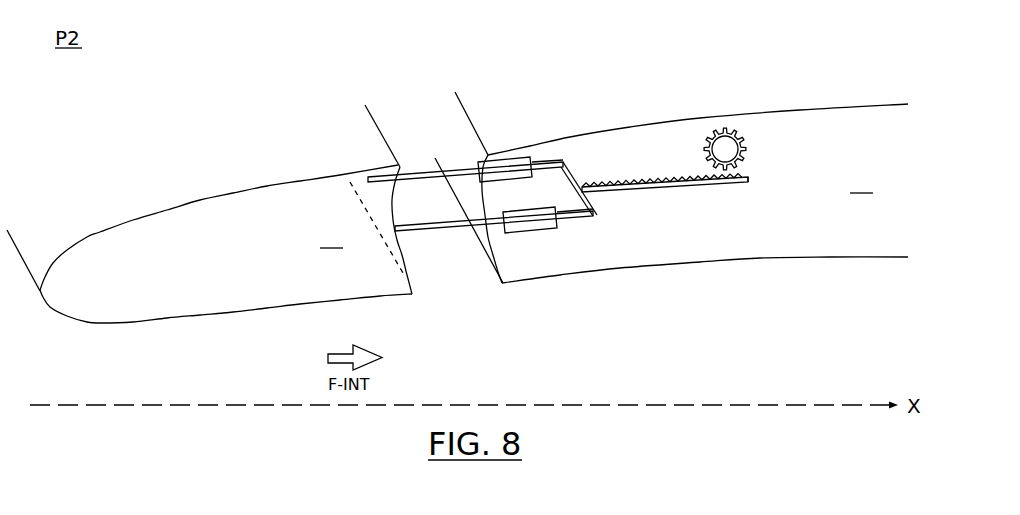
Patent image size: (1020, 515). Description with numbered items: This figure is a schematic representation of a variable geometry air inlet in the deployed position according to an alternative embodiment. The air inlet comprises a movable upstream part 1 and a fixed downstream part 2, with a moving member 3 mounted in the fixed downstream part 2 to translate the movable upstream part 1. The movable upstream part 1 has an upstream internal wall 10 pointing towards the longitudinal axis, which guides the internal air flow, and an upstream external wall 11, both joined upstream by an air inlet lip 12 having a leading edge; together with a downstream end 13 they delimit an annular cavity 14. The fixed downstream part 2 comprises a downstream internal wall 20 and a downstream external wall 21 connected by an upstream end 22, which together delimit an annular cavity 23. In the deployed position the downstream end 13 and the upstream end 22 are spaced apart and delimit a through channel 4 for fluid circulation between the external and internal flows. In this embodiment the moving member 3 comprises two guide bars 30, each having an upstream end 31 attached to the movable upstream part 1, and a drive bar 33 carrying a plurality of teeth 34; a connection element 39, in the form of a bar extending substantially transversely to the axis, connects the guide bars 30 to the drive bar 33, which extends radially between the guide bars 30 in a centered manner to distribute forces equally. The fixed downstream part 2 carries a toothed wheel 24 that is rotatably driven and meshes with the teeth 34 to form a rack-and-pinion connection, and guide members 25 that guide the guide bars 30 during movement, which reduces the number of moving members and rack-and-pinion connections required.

The movable upstream part 1 is at (150, 170).
The fixed downstream part 2 is at (730, 58).
The moving member 3 is at (626, 209).
The through channel 4 is at (474, 276).
The upstream internal wall 10 is at (218, 317).
The upstream external wall 11 is at (205, 148).
The air inlet lip 12 is at (40, 293).
The downstream end 13 is at (381, 125).
The annular cavity 14 is at (332, 238).
The downstream internal wall 20 is at (793, 258).
The downstream external wall 21 is at (690, 70).
The upstream end 22 is at (456, 108).
The annular cavity 23 is at (862, 183).
The toothed wheel 24 is at (730, 128).
The guide member 25 is at (503, 181).
The guide bar 30 is at (553, 168).
The upstream end 31 is at (372, 183).
The drive bar 33 is at (703, 187).
The teeth 34 is at (746, 168).
The connection element 39 is at (582, 170).